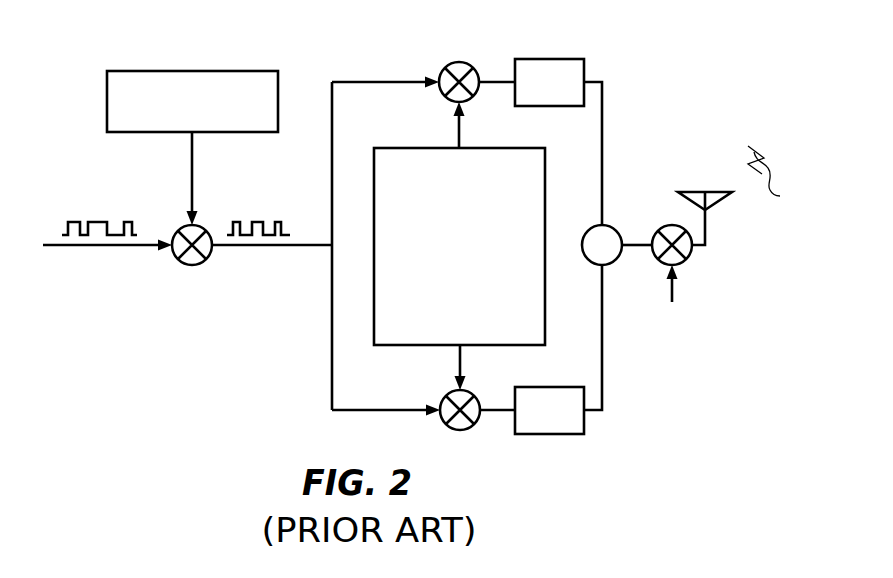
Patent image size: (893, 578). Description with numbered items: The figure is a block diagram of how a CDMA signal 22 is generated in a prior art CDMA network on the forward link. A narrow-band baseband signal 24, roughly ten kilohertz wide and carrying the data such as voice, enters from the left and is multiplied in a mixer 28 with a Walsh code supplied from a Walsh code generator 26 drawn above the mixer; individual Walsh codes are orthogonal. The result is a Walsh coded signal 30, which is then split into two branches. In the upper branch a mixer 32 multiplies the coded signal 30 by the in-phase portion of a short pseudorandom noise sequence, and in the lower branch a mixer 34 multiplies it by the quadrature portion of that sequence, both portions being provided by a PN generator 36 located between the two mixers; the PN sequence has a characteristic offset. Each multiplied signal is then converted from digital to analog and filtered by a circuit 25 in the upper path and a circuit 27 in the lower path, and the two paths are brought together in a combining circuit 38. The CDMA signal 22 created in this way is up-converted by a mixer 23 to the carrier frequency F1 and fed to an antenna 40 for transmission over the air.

The CDMA signal 22 is at (779, 181).
The mixer 23 is at (690, 256).
The baseband signal 24 is at (68, 226).
The digital-to-analog and filtering circuit 25 is at (558, 59).
The Walsh code generator 26 is at (107, 100).
The digital-to-analog and filtering circuit 27 is at (586, 425).
The mixer 28 is at (192, 266).
The coded signal 30 is at (255, 224).
The mixer 32 is at (466, 60).
The mixer 34 is at (476, 422).
The PN generator 36 is at (398, 337).
The combining circuit 38 is at (588, 263).
The antenna 40 is at (700, 191).